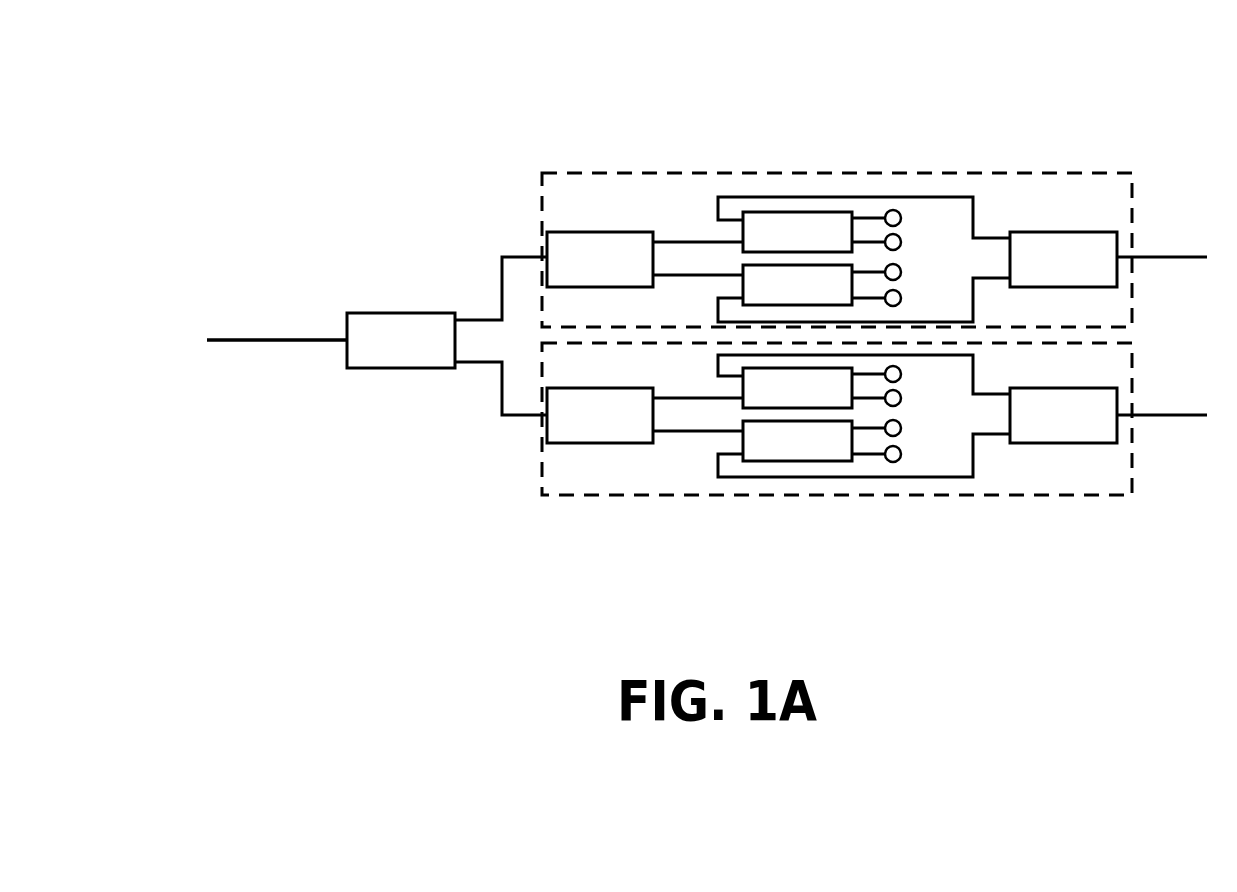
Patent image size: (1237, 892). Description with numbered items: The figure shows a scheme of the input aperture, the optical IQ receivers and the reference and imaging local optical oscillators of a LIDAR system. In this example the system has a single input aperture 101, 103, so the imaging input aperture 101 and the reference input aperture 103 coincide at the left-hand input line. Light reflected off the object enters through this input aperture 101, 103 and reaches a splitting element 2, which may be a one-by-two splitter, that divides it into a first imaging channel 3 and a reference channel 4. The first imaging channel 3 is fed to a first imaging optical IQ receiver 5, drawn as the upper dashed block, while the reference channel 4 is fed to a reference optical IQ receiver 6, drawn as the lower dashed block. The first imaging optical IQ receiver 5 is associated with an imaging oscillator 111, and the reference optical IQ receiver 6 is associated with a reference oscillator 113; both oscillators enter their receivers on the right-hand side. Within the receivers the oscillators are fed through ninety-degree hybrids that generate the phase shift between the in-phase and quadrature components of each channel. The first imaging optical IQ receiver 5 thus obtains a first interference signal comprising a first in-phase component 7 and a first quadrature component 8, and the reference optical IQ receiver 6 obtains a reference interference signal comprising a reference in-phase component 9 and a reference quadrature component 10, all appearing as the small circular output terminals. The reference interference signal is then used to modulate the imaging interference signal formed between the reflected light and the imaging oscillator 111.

The imaging input aperture 101 is at (238, 340).
The reference input aperture 103 is at (277, 247).
The splitting element 2 is at (393, 313).
The first imaging channel 3 is at (515, 257).
The reference channel 4 is at (515, 415).
The first imaging optical IQ receiver 5 is at (837, 171).
The reference optical IQ receiver 6 is at (837, 486).
The first in-phase component 7 is at (897, 211).
The first quadrature component 8 is at (897, 290).
The reference in-phase component 9 is at (898, 381).
The reference quadrature component 10 is at (890, 462).
The imaging oscillator 111 is at (1170, 257).
The reference oscillator 113 is at (1170, 415).